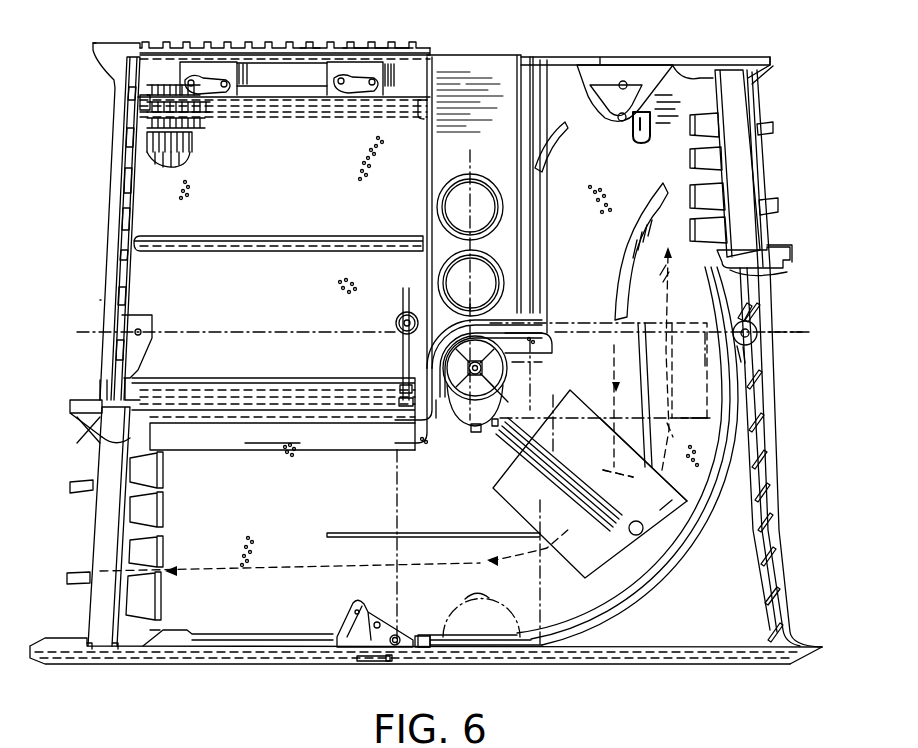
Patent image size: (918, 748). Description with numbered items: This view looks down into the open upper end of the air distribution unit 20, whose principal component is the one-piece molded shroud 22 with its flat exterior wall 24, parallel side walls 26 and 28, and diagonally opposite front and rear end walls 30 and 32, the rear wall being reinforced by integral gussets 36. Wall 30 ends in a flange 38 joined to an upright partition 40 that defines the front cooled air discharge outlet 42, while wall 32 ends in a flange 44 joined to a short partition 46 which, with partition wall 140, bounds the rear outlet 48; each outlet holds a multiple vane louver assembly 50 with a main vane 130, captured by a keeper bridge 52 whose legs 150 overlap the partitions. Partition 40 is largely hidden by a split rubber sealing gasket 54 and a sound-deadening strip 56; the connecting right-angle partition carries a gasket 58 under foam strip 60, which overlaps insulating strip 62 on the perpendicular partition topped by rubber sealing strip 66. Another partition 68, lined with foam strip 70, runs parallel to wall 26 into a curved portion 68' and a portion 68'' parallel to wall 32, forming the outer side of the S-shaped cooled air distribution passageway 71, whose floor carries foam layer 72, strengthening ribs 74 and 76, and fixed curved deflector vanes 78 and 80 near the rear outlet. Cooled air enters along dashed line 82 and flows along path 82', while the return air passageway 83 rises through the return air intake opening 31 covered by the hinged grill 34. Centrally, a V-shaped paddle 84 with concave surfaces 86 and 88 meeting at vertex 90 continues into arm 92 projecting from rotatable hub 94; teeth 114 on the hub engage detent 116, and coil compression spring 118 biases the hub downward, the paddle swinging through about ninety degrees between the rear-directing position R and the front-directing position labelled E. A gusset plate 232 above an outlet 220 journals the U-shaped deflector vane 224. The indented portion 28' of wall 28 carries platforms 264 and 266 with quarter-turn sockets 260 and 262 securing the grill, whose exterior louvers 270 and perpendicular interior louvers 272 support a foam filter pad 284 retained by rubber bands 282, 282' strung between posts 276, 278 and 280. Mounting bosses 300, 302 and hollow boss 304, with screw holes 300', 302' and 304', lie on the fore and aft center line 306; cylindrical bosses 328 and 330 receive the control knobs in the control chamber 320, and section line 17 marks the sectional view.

The air distribution unit 20 is at (111, 32).
The shroud 22 is at (486, 56).
The exterior wall 24 is at (752, 582).
The side wall 26 is at (237, 664).
The side wall 28 is at (645, 46).
The indented portion 28' is at (318, 31).
The front end wall 30 is at (118, 214).
The return air intake opening 31 is at (424, 212).
The rear end wall 32 is at (779, 505).
The grill 34 is at (228, 43).
The gussets 36 is at (778, 547).
The flange 38 is at (80, 400).
The inner upright partition 40 is at (88, 440).
The front discharge outlet 42 is at (67, 570).
The flange 44 is at (792, 266).
The upright partition 46 is at (768, 223).
The rear discharge outlet 48 is at (766, 176).
The multiple vane louver assembly 50 is at (163, 515).
The keeper bridge 52 is at (98, 523).
The sealing gasket 54 is at (233, 424).
The strip of sound-deadening material 56 is at (245, 446).
The rubber gasket 58 is at (405, 378).
The strip of foam 60 is at (548, 306).
The insulating strip 62 is at (540, 252).
The rubber sealing strip 66 is at (540, 204).
The interior partition 68 is at (238, 624).
The curved portion 68' is at (627, 456).
The partition portion 68'' is at (773, 450).
The foam insulating strip 70 is at (574, 636).
The cooled air distribution passageway 71 is at (224, 604).
The foam sound-deadening layer 72 is at (233, 550).
The strengthening rib 74 is at (410, 533).
The strengthening rib 76 is at (672, 395).
The curved air deflector vane 78 is at (640, 208).
The curved air deflector vane 80 is at (553, 148).
The dashed line (cooled air entry path) 82 is at (620, 362).
The flow path 82' is at (335, 552).
The return air passageway 83 is at (166, 278).
The paddle 84 is at (482, 624).
The concave upper surface 86 is at (670, 490).
The concave upper surface 88 is at (586, 581).
The vertex 90 is at (614, 496).
The arm 92 is at (495, 427).
The hub 94 is at (510, 375).
The teeth 114 is at (436, 425).
The detent 116 is at (473, 433).
The coil compression spring 118 is at (550, 343).
The main vane 130 is at (768, 190).
The partition wall 140 is at (770, 72).
The legs 150 is at (728, 268).
The outlet 220 is at (390, 663).
The vane 224 is at (608, 119).
The gusset plate 232 is at (610, 63).
The quarter-turn socket 260 is at (193, 78).
The quarter-turn socket 262 is at (368, 47).
The indented platform 264 is at (238, 93).
The indented platform 266 is at (384, 93).
The exterior louvers 270 is at (152, 165).
The interior louvers 272 is at (157, 150).
The post 276 is at (420, 108).
The post 278 is at (415, 247).
The post 280 is at (403, 390).
The rubber bands 282 is at (283, 166).
The shelf 282' is at (270, 401).
The foam filter pad 284 is at (197, 217).
The mounting boss 300 is at (165, 340).
The screw hole 300' is at (169, 341).
The mounting boss 302 is at (378, 323).
The screw hole 302' is at (393, 308).
The mounting boss 304 is at (776, 332).
The screw hole 304' is at (780, 299).
The fore and aft center line 306 is at (800, 338).
The control chamber 320 is at (500, 92).
The cylindrical boss 328 is at (499, 192).
The cylindrical boss 330 is at (503, 268).
The section line 17 is at (470, 155).
The direction E is at (676, 364).
The rear extreme position R is at (481, 602).